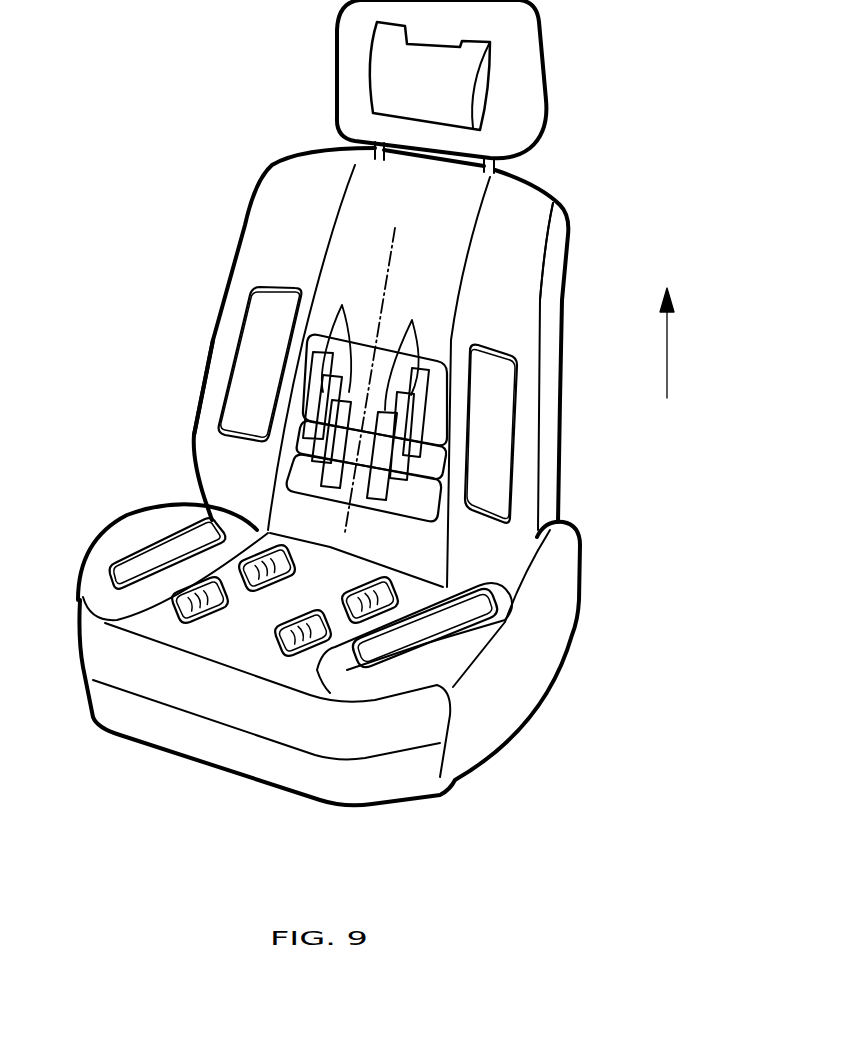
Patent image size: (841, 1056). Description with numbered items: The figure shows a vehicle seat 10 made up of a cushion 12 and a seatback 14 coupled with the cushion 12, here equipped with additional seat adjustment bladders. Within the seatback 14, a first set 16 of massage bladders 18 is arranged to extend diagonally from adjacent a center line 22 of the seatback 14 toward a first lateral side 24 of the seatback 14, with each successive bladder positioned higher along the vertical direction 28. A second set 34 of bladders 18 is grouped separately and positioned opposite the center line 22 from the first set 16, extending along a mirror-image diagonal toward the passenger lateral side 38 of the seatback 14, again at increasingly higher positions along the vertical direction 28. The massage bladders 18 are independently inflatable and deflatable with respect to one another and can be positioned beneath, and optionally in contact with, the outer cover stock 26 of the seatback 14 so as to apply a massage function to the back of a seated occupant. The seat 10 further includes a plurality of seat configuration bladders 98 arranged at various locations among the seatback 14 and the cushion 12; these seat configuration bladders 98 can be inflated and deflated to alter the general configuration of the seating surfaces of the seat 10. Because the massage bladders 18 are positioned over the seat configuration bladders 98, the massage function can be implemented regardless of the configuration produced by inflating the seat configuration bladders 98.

The vehicle seat 10 is at (624, 99).
The cushion 12 is at (500, 706).
The seatback 14 is at (517, 303).
The first set of massage bladders 16 is at (452, 401).
The massage bladders 18 is at (366, 389).
The center line 22 is at (396, 252).
The first lateral side 24 is at (551, 398).
The outer cover stock 26 is at (523, 266).
The vertical direction 28 is at (670, 358).
The second set of bladders 34 is at (305, 357).
The passenger lateral side 38 is at (210, 333).
The seat configuration bladders 98 is at (244, 374).